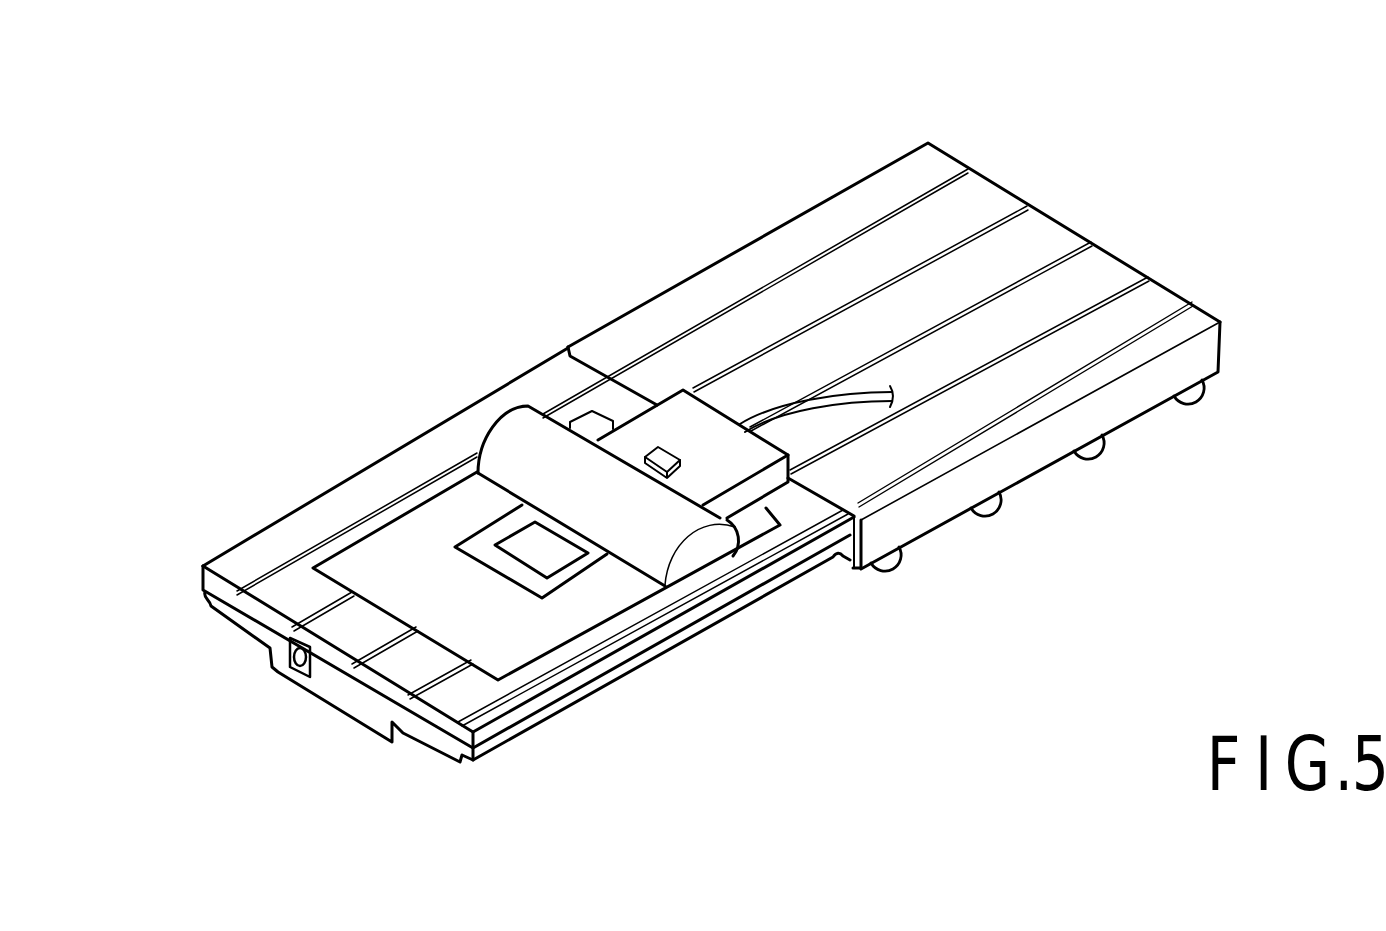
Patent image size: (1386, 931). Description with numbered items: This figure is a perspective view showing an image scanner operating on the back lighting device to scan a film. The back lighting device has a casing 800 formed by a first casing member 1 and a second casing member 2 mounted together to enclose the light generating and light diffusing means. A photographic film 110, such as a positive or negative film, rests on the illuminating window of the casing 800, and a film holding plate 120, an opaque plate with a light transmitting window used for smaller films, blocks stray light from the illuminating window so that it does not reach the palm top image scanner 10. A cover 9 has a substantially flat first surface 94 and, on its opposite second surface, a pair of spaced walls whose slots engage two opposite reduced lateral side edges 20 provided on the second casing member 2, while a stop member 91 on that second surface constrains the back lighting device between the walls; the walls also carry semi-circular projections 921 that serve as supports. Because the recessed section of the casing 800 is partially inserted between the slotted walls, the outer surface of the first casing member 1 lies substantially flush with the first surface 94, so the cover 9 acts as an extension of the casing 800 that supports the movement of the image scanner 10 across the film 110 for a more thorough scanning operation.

The first casing member 1 is at (568, 693).
The second casing member 2 is at (447, 763).
The cover 9 is at (856, 152).
The palm top image scanner 10 is at (708, 548).
The reduced lateral side edges 20 is at (203, 606).
The stop member 91 is at (1048, 448).
The first surface 94 is at (985, 205).
The photographic film 110 is at (563, 558).
The film holding plate 120 is at (405, 535).
The casing 800 is at (498, 362).
The semi-circular projections 921 is at (1105, 445).